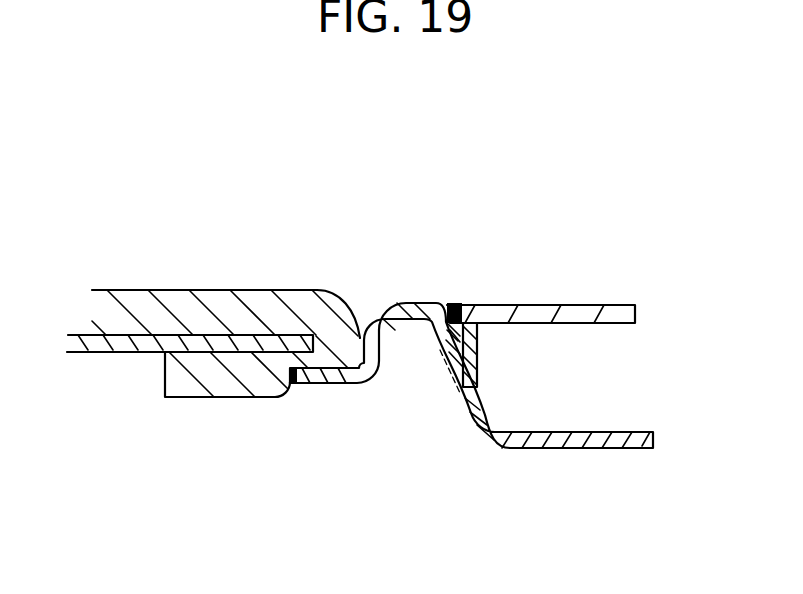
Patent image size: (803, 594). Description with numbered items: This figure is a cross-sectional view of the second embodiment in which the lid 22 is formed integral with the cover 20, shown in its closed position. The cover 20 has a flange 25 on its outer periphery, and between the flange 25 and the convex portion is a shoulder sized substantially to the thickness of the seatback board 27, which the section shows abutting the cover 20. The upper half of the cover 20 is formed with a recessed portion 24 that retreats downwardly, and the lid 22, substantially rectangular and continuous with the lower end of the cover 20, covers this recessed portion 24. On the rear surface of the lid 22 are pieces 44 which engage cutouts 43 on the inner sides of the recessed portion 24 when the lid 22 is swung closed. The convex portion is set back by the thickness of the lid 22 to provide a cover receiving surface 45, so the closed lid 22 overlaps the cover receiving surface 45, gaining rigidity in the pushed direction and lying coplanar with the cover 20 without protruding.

The seatback board 27 is at (226, 309).
The cover 20 is at (408, 288).
The flange 25 is at (308, 385).
The lid 22 is at (593, 288).
The pieces 44 is at (478, 352).
The cover receiving surface 45 is at (457, 313).
The cutouts 43 is at (460, 393).
The recessed portion 24 is at (565, 398).